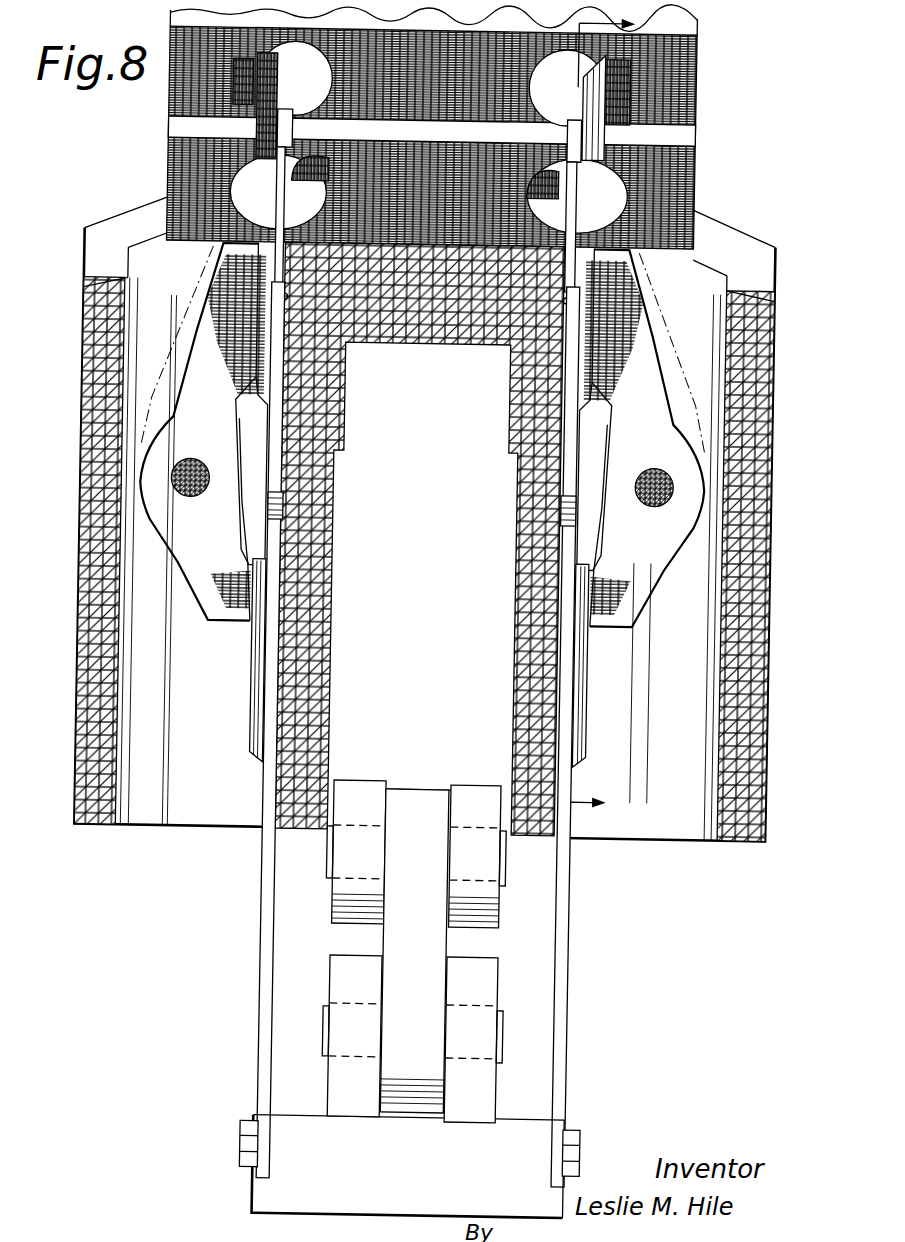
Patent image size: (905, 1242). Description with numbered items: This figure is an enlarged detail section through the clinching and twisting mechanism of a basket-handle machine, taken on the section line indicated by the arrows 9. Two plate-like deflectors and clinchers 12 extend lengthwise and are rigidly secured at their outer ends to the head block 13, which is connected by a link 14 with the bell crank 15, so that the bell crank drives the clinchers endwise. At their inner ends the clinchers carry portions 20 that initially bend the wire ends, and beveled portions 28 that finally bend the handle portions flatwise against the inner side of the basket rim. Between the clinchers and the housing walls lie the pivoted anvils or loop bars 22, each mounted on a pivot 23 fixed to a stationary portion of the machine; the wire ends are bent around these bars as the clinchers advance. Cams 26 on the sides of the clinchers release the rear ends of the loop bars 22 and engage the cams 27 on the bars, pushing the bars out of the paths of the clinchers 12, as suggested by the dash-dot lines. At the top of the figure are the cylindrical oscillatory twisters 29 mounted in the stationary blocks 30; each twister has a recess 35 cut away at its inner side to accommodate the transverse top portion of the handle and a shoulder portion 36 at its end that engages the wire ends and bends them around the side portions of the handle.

The section line 9— 9 is at (606, 416).
The deflectors and clinchers 12 is at (268, 947).
The head block 13 is at (344, 1168).
The link 14 is at (413, 949).
The bell crank 15 is at (475, 792).
The portions of the clinchers 20 is at (283, 435).
The anvils or loop bars 22 is at (212, 348).
The pivot 23 is at (174, 495).
The cams on the clinchers 26 is at (266, 729).
The cams on the anvils 27 is at (240, 424).
The beveled portions 28 is at (280, 515).
The twisters 29 is at (250, 63).
The stationary blocks 30 is at (176, 12).
The recesses 35 is at (256, 103).
The shoulder portions 36 is at (302, 190).